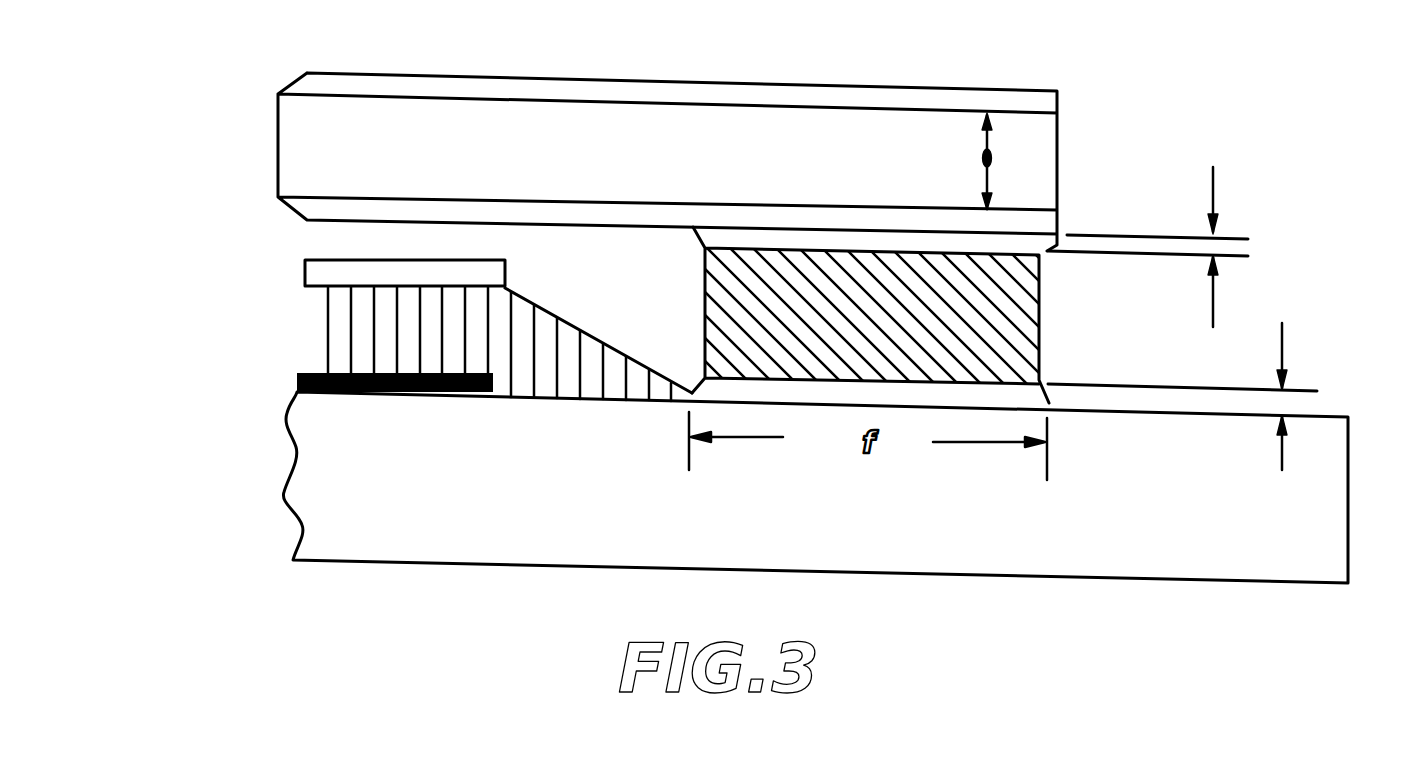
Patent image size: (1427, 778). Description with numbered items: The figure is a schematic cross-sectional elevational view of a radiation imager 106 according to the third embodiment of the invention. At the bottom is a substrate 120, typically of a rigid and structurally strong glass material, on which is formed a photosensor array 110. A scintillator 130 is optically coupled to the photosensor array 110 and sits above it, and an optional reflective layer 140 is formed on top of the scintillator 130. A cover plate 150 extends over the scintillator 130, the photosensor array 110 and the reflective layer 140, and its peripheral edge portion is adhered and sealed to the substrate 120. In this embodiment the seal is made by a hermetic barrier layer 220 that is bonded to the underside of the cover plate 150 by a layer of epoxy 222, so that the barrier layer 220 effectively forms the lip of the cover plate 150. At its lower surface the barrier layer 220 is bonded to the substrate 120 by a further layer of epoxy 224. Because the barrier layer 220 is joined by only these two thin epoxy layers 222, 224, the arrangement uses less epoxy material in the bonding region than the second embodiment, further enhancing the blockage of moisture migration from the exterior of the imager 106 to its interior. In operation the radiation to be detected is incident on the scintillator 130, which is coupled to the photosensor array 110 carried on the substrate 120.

The radiation imager 106 is at (700, 56).
The cover plate 150 is at (278, 72).
The reflective layer 140 is at (305, 275).
The scintillator 130 is at (328, 328).
The photosensor array 110 is at (297, 381).
The substrate 120 is at (297, 452).
The hermetic barrier layer 220 is at (882, 285).
The layer of epoxy 222 is at (1243, 248).
The further layer of epoxy 224 is at (1312, 405).